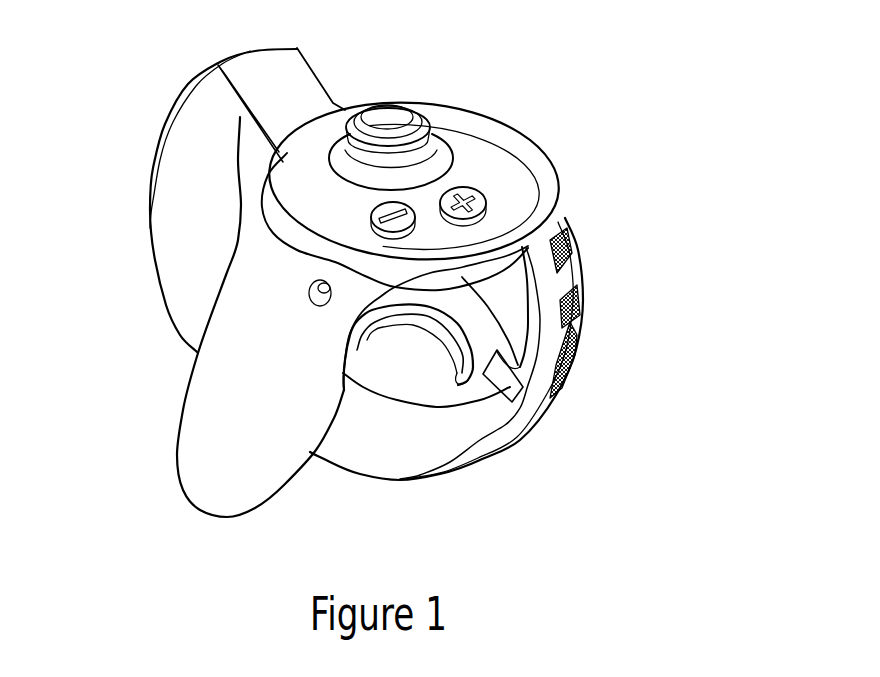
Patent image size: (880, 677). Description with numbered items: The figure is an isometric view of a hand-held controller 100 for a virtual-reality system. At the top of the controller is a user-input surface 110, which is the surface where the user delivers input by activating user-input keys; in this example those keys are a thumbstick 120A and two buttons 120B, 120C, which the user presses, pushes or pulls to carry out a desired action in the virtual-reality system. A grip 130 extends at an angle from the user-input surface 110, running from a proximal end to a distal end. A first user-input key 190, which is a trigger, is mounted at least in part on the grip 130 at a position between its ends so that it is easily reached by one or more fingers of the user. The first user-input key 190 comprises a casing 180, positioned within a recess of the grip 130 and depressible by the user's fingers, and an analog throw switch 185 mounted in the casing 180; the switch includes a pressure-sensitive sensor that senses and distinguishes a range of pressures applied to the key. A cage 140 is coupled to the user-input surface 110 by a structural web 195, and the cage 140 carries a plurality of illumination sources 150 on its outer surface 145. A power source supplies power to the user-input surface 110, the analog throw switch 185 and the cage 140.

The hand-held controller 100 is at (586, 40).
The user-input surface 110 is at (520, 190).
The thumbstick 120A is at (388, 122).
The button 120B is at (470, 187).
The button 120C is at (372, 216).
The grip 130 is at (240, 450).
The cage 140 is at (175, 147).
The outer surface 145 is at (560, 220).
The illumination sources 150 is at (570, 253).
The casing 180 is at (525, 380).
The analog throw switch 185 is at (452, 346).
The first user-input key 190 is at (486, 400).
The structural web 195 is at (530, 410).